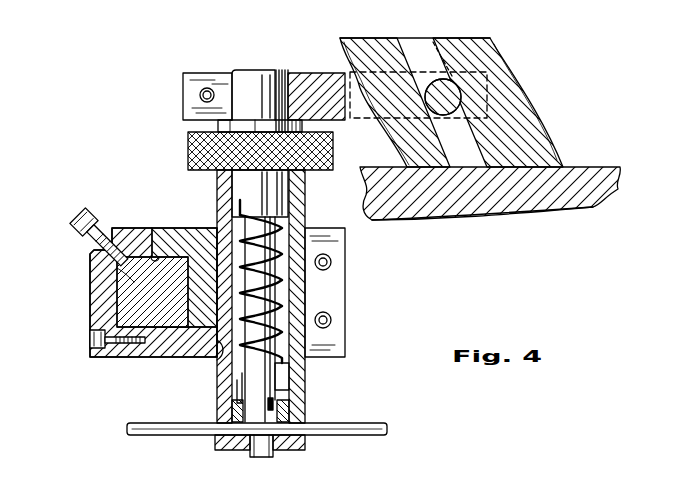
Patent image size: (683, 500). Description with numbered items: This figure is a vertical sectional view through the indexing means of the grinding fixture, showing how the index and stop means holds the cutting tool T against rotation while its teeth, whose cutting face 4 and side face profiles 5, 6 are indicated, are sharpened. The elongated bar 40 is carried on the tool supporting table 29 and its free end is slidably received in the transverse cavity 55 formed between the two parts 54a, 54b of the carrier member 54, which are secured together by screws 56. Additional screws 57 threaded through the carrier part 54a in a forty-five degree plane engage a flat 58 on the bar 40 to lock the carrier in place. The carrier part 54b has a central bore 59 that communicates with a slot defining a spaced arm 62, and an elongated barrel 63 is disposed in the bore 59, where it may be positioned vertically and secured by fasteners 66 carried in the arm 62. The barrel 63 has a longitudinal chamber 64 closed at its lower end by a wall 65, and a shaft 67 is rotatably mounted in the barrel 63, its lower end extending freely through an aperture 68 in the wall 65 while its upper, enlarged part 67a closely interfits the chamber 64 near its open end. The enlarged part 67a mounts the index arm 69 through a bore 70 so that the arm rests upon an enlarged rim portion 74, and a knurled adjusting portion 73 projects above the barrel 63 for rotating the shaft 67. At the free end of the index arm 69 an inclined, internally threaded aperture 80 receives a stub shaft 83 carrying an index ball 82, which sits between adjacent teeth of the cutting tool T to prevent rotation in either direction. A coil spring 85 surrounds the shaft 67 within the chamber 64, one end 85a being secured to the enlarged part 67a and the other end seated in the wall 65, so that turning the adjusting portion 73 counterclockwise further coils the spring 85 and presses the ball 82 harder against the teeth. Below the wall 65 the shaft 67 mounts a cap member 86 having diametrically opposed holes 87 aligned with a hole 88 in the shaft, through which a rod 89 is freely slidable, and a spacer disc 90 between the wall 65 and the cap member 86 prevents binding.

The cutting tool T is at (508, 48).
The cutting face 4 is at (409, 19).
The side face profile 5 is at (497, 158).
The side face profile 6 is at (465, 160).
The tool supporting table 29 is at (600, 201).
The elongated bar 40 is at (98, 308).
The carrier member 54 is at (153, 357).
The carrier member part 54a is at (97, 268).
The carrier member part 54b is at (182, 229).
The cavity 55 is at (148, 255).
The screws 56 is at (92, 342).
The screws 57 is at (81, 215).
The flat 58 is at (118, 270).
The bore 59 is at (228, 362).
The arm 62 is at (333, 297).
The elongated barrel 63 is at (283, 388).
The chamber 64 is at (283, 373).
The wall 65 is at (277, 400).
The fasteners 66 is at (347, 253).
The shaft 67 is at (250, 367).
The enlarged shaft part 67a is at (290, 193).
The aperture 68 is at (270, 405).
The index arm 69 is at (305, 70).
The bore 70 is at (232, 83).
The knurled adjusting portion 73 is at (188, 150).
The enlarged rim portion 74 is at (218, 126).
The internally threaded aperture 80 is at (440, 80).
The index ball 82 is at (450, 113).
The stub shaft 83 is at (436, 62).
The coil spring 85 is at (282, 290).
The spring end 85a is at (240, 205).
The cap member 86 is at (235, 398).
The holes 87 is at (213, 435).
The hole 88 is at (258, 435).
The rod 89 is at (340, 437).
The spacer disc 90 is at (222, 408).